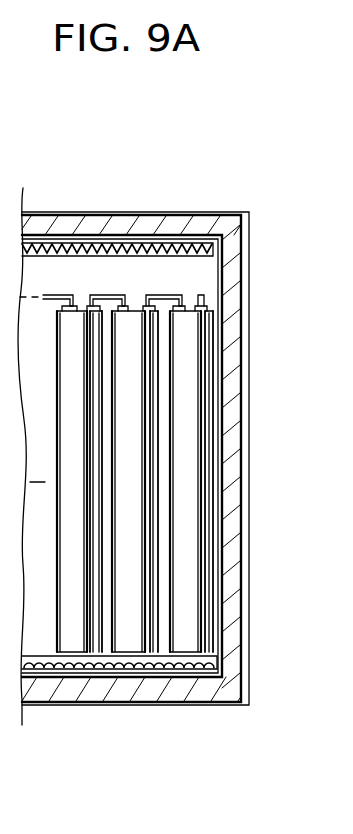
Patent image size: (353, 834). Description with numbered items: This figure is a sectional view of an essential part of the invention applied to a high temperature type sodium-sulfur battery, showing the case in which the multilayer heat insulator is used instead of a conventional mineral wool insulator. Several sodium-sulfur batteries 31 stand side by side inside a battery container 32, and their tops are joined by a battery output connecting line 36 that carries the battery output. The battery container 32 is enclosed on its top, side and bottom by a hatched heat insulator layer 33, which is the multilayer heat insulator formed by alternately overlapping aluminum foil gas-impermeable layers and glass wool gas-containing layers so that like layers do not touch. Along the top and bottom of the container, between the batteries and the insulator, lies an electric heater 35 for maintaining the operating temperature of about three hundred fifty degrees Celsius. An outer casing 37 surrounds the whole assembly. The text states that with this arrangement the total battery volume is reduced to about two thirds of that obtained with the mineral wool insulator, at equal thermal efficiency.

The sodium-sulfur battery 31 is at (205, 397).
The battery container 32 is at (220, 515).
The heat insulator layer 33 is at (193, 693).
The electric heater 35 is at (97, 250).
The battery output connecting line 36 is at (164, 296).
The outer casing 37 is at (305, 253).